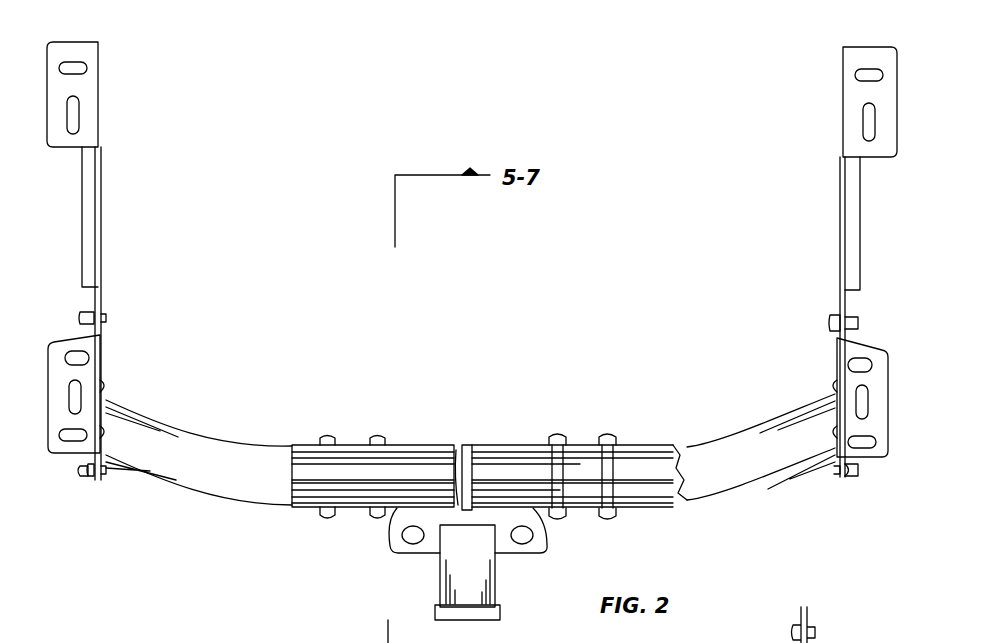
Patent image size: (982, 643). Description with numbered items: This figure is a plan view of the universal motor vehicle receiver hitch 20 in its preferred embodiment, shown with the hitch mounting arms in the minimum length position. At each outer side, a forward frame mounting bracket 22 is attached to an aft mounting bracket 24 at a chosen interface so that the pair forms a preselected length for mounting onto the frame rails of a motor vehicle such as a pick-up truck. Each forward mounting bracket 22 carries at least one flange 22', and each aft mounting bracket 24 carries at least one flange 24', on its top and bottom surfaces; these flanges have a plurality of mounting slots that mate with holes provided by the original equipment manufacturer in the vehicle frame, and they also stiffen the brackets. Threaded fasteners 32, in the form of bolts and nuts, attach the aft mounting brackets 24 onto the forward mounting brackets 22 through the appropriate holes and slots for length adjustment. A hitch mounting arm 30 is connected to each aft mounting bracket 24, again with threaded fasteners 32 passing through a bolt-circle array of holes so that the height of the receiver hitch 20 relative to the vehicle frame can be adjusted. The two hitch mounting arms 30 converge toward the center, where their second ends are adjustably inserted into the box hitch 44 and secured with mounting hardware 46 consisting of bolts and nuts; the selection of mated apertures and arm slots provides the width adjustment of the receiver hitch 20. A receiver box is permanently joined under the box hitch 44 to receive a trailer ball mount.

The universal motor vehicle receiver hitch 20 is at (463, 405).
The forward frame mounting bracket 22 is at (469, 313).
The flange 22' is at (472, 171).
The aft mounting bracket 24 is at (470, 477).
The flange 24' is at (468, 396).
The hitch mounting arm 30 is at (240, 447).
The threaded fasteners 32 is at (83, 473).
The box hitch 44 is at (528, 566).
The mounting hardware 46 is at (313, 520).